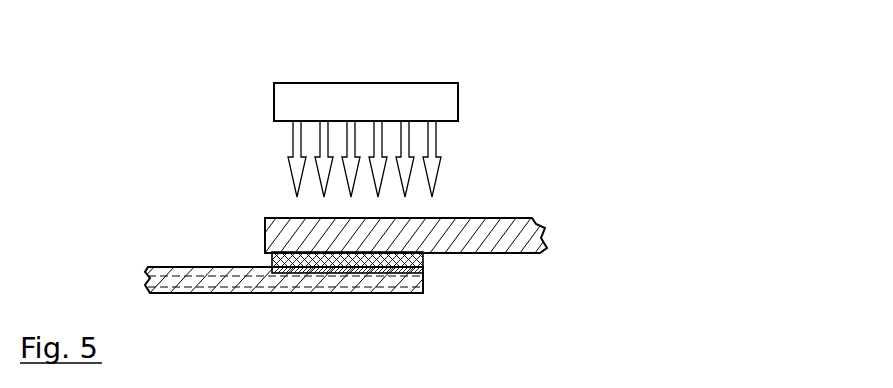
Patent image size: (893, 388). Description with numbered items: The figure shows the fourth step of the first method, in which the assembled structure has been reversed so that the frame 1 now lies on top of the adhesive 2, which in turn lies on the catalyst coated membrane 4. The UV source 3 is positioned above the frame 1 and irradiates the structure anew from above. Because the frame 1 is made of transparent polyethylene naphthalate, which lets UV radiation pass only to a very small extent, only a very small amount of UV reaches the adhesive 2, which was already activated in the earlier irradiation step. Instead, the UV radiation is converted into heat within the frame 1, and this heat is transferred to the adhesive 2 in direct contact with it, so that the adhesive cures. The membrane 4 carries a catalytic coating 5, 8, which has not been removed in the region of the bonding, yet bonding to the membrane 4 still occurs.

The frame 1 is at (453, 243).
The adhesive 2 is at (288, 252).
The UV source 3 is at (323, 100).
The catalyst coated membrane 4 is at (359, 289).
The catalytic coating 5 is at (177, 293).
The catalytic coating 8 is at (168, 268).